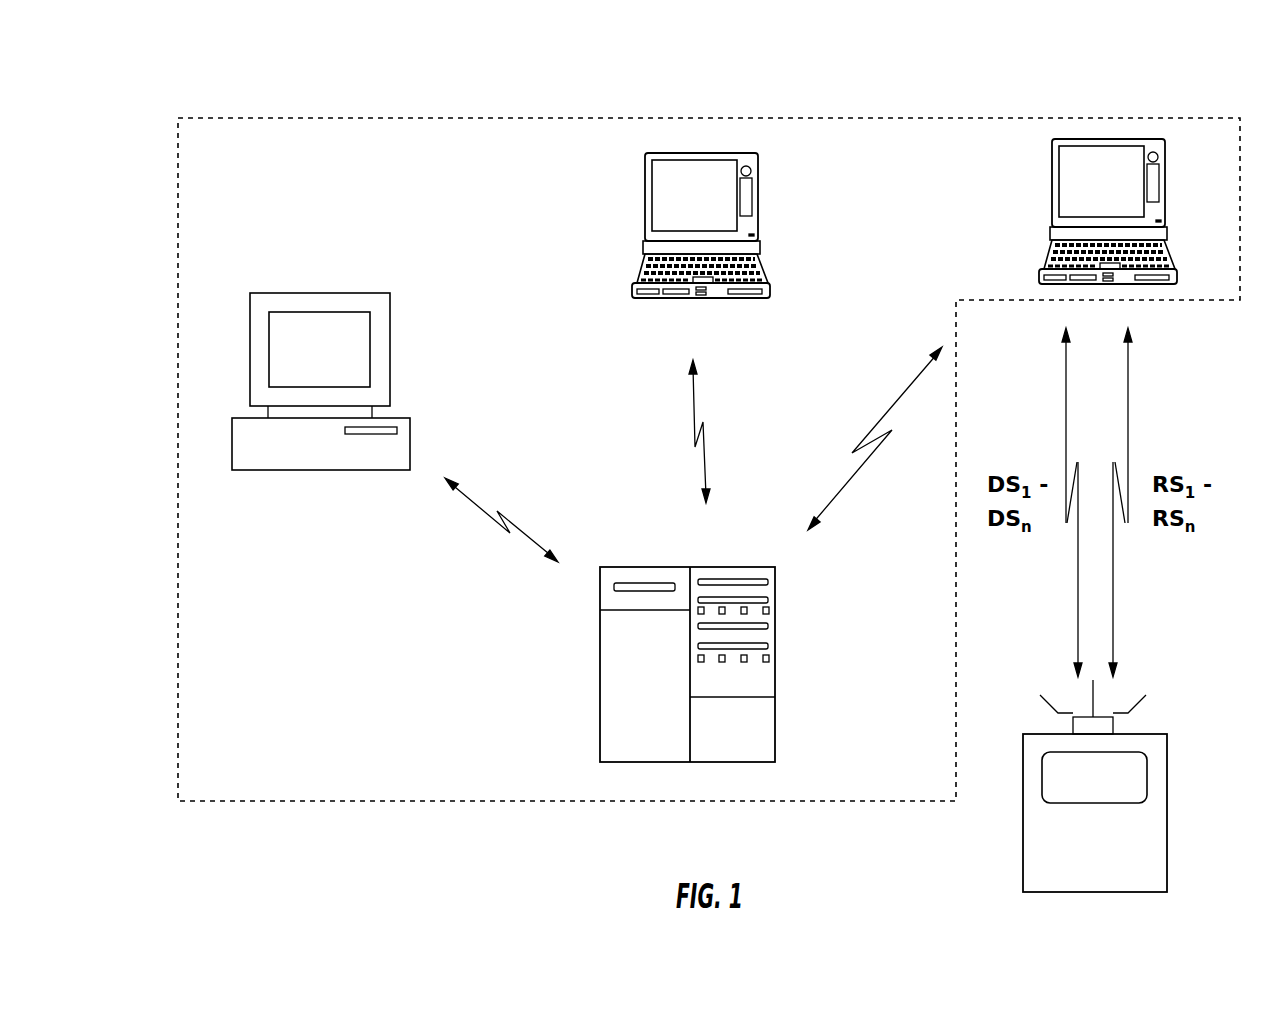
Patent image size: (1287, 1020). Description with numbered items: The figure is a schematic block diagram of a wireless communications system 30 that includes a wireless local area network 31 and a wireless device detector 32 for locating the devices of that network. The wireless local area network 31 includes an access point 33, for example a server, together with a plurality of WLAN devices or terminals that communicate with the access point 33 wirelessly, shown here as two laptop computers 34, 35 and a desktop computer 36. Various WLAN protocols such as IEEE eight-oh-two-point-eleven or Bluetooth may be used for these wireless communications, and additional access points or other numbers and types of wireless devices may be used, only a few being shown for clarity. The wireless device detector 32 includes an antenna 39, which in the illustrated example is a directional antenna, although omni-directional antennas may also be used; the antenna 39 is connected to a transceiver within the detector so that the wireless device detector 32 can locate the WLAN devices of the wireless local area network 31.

The wireless communications system 30 is at (146, 64).
The wireless local area network 31 is at (178, 293).
The wireless device detector 32 is at (1168, 792).
The access point 33 is at (600, 668).
The laptop computer 34 is at (1050, 178).
The laptop computer 35 is at (759, 200).
The desktop computer 36 is at (392, 342).
The antenna 39 is at (1146, 698).